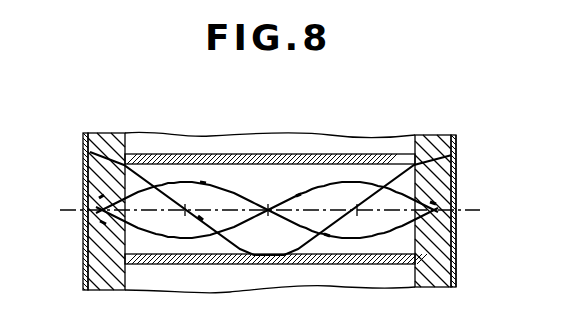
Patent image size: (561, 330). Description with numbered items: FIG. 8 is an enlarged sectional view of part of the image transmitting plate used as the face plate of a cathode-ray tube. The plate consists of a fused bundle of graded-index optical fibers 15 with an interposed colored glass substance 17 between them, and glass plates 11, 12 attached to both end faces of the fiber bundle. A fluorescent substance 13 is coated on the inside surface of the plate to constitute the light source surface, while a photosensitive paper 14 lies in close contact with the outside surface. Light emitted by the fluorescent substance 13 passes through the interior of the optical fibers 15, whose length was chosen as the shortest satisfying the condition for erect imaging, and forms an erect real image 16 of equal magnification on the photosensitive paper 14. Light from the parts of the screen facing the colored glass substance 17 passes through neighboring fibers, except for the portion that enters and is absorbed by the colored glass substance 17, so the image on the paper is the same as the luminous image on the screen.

The glass plate 11 is at (118, 133).
The glass plate 12 is at (430, 135).
The fluorescent substance 13 is at (85, 265).
The photosensitive paper 14 is at (452, 274).
The optical fibers 15 is at (270, 182).
The erect real image 16 is at (456, 177).
The colored glass substance 17 is at (203, 156).